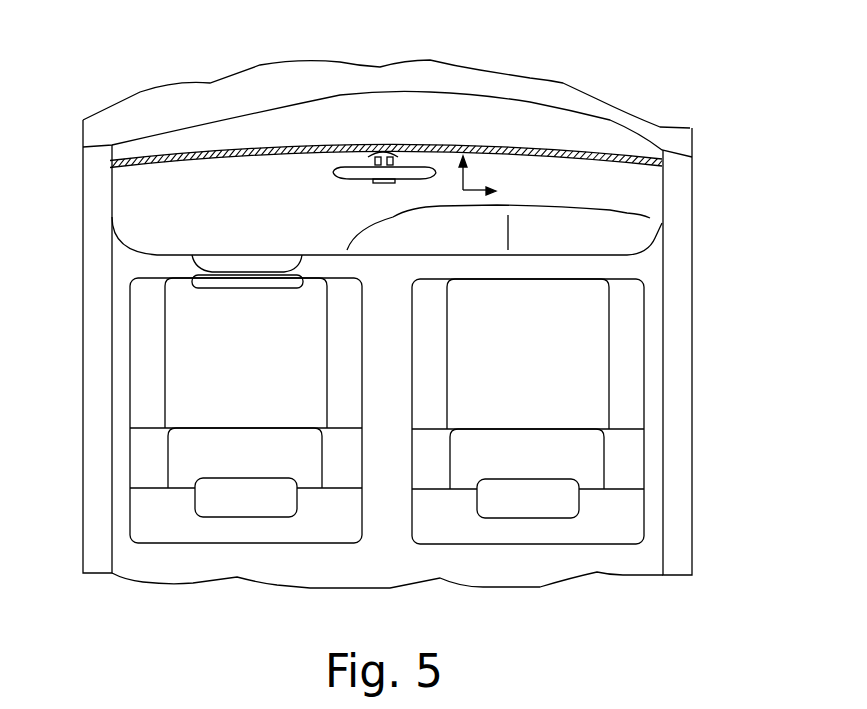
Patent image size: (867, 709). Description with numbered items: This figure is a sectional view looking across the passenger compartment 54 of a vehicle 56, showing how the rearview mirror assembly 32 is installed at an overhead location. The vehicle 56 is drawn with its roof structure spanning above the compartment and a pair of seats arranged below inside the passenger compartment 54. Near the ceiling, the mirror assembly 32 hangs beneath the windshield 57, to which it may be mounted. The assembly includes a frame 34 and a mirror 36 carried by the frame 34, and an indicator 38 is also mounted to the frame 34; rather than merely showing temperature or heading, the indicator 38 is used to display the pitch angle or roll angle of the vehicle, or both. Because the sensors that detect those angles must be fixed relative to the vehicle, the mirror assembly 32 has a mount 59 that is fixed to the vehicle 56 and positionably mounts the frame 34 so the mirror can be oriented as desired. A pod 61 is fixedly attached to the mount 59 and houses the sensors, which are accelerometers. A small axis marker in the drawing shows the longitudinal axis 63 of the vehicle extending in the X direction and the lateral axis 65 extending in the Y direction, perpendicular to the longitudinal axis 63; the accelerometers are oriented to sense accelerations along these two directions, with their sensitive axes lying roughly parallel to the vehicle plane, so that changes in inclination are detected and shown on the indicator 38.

The mirror assembly 32 is at (430, 197).
The frame 34 is at (333, 173).
The mirror 36 is at (407, 181).
The indicator 38 is at (373, 183).
The passenger compartment 54 is at (401, 373).
The vehicle 56 is at (668, 123).
The windshield 57 is at (582, 150).
The mount 59 is at (383, 149).
The pod 61 is at (373, 155).
The longitudinal axis 63 is at (468, 162).
The lateral axis 65 is at (482, 188).